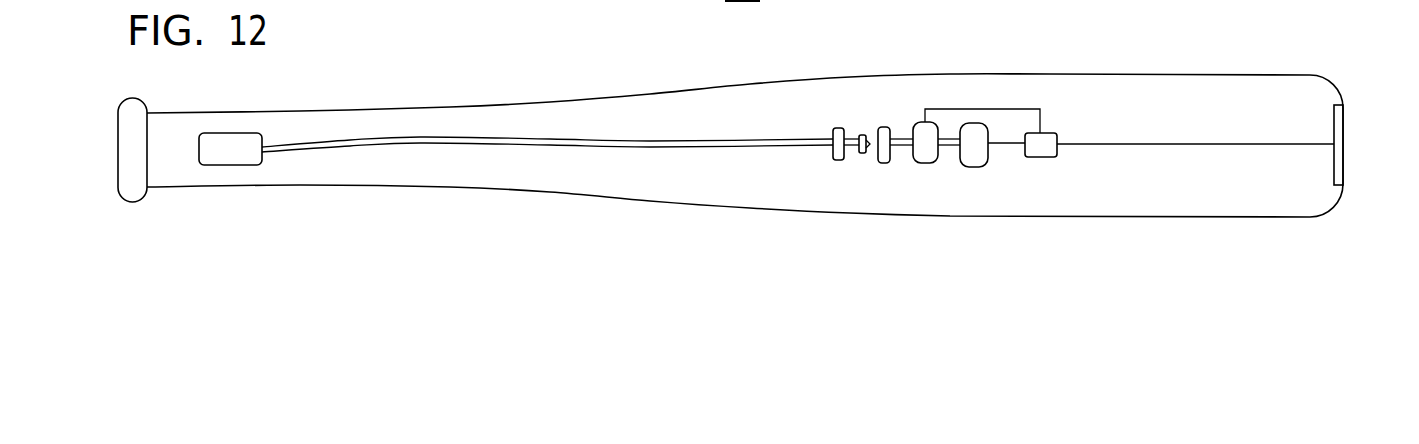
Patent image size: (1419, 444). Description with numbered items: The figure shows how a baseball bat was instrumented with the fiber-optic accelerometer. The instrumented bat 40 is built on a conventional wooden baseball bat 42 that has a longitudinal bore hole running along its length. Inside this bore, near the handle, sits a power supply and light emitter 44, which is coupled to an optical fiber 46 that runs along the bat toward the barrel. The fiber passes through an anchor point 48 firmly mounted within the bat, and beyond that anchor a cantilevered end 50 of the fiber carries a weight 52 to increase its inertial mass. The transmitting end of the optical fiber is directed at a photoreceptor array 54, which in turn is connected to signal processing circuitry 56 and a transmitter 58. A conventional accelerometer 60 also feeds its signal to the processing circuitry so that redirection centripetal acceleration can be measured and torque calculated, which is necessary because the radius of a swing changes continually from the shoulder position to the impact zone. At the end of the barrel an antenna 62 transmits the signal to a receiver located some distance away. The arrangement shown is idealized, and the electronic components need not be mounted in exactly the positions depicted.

The instrumented bat 40 is at (1144, 69).
The conventional wooden baseball bat 42 is at (1065, 74).
The power supply and light emitter 44 is at (254, 139).
The optical fiber 46 is at (447, 136).
The anchor point 48 is at (830, 154).
The cantilevered end 50 is at (850, 135).
The weight 52 is at (864, 154).
The photoreceptor array 54 is at (884, 127).
The signal processing circuitry 56 is at (925, 162).
The transmitter 58 is at (987, 162).
The conventional accelerometer 60 is at (1053, 133).
The antenna 62 is at (1345, 127).